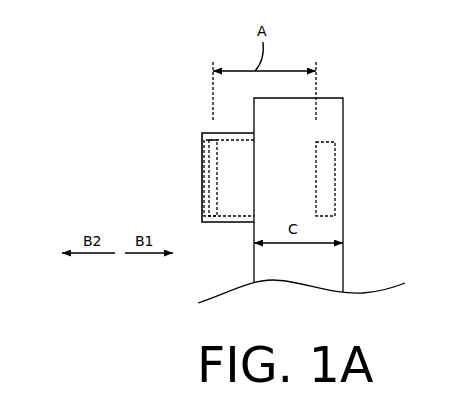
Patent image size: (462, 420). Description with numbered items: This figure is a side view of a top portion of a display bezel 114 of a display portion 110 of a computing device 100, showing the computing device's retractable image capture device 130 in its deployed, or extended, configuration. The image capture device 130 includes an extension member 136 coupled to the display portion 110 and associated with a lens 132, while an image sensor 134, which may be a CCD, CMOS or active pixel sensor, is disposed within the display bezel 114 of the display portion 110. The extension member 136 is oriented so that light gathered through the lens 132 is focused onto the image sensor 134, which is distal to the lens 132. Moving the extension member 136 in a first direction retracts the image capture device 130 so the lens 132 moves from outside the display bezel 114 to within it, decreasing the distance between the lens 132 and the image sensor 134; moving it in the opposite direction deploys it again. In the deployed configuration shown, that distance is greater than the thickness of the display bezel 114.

The computing device 100 is at (96, 97).
The display portion 110 is at (380, 225).
The display bezel 114 is at (245, 255).
The image capture device 130 is at (185, 93).
The lens 132 is at (208, 173).
The image sensor 134 is at (332, 178).
The extension member 136 is at (200, 217).